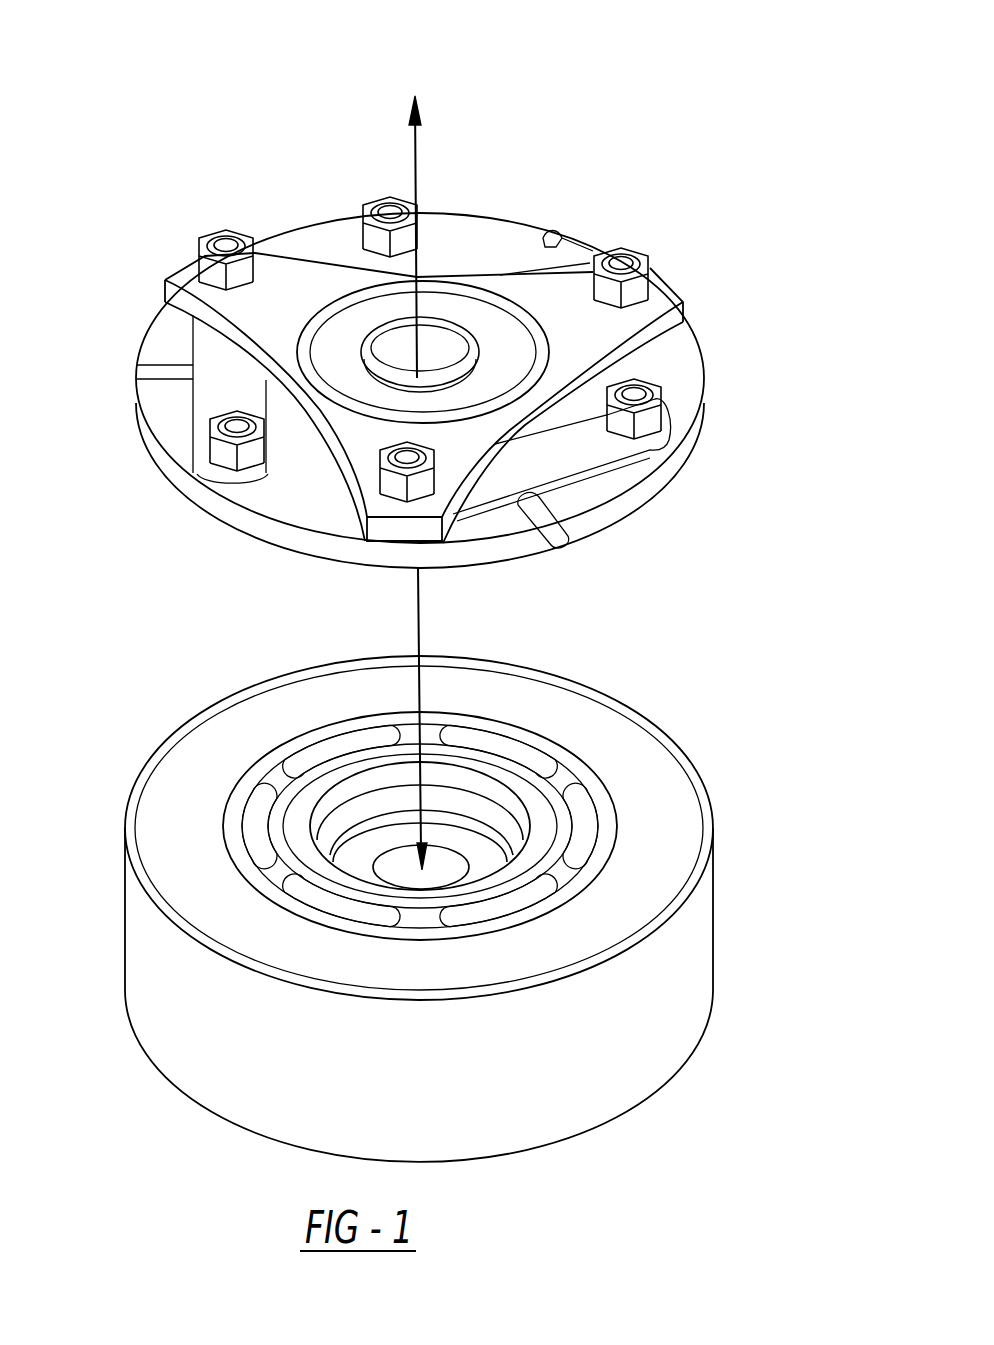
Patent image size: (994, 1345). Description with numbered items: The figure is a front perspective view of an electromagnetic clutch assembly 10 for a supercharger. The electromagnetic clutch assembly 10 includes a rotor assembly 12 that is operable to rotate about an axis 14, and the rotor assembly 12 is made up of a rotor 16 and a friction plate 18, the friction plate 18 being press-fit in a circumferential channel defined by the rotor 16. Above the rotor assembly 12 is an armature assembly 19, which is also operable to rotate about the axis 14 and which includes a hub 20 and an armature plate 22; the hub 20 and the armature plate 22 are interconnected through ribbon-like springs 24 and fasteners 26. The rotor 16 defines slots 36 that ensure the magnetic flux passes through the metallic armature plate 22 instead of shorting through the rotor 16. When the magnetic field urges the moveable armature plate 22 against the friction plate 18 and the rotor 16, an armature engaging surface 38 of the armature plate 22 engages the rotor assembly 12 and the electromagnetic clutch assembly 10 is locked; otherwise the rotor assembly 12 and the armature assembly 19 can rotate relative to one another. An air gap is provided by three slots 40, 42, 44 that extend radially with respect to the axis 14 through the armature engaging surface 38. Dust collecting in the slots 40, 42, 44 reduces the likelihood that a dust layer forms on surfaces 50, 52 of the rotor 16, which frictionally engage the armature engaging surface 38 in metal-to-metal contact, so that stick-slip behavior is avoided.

The electromagnetic clutch assembly 10 is at (747, 278).
The rotor assembly 12 is at (770, 815).
The axis 14 is at (417, 138).
The rotor 16 is at (660, 1070).
The friction plate 18 is at (170, 837).
The armature assembly 19 is at (280, 165).
The hub 20 is at (577, 281).
The armature plate 22 is at (177, 428).
The ribbon-like springs 24 is at (513, 262).
The fasteners 26 is at (194, 222).
The slots 36 is at (320, 750).
The armature engaging surface 38 is at (628, 506).
The slot 40 is at (544, 527).
The slot 42 is at (158, 372).
The slot 44 is at (553, 245).
The surface 50 is at (505, 875).
The surface 52 is at (583, 783).